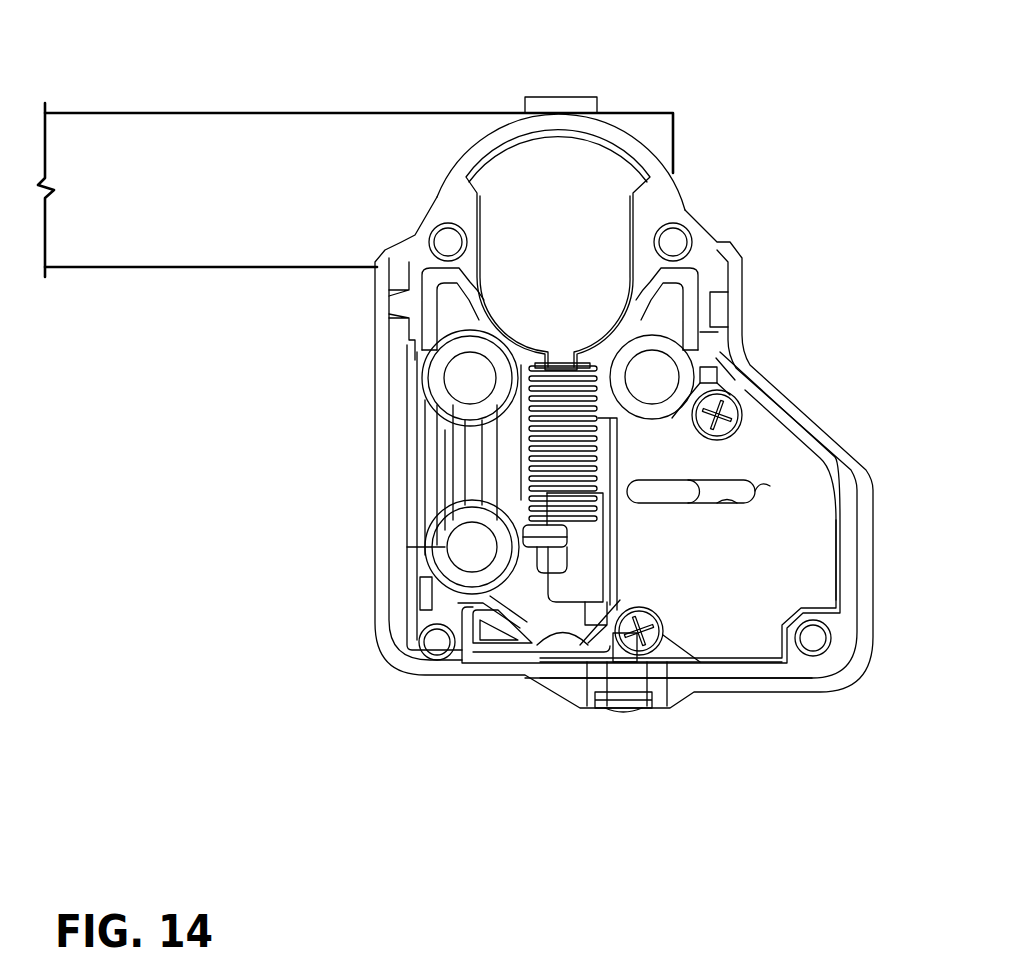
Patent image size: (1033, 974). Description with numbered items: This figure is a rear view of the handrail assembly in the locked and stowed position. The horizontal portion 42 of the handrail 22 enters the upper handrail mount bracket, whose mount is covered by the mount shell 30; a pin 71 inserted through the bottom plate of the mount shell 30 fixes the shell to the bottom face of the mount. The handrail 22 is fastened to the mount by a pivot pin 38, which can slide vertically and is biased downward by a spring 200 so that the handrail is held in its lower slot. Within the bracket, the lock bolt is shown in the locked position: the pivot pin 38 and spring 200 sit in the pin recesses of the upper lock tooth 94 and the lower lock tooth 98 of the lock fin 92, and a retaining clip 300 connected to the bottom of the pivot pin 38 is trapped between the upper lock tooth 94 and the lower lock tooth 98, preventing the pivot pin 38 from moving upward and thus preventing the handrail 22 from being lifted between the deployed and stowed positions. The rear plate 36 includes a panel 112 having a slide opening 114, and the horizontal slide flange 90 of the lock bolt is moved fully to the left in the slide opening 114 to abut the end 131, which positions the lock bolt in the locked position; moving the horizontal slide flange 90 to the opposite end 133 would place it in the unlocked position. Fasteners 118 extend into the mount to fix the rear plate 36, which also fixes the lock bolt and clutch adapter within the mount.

The horizontal portion 42 is at (232, 138).
The handrail 22 is at (294, 104).
The mount shell 30 is at (880, 532).
The retaining clip 300 is at (480, 565).
The spring 200 is at (560, 437).
The pivot pin 38 is at (548, 474).
The upper lock tooth 94 is at (540, 530).
The lower lock tooth 98 is at (535, 572).
The lock fin 92 is at (565, 615).
The pin 71 is at (633, 708).
The fasteners 118 is at (740, 400).
The end 131 is at (777, 464).
The rear plate 36 is at (640, 444).
The panel 112 is at (808, 522).
The horizontal slide flange 90 is at (672, 495).
The slide opening 114 is at (730, 505).
The end 133 is at (762, 494).